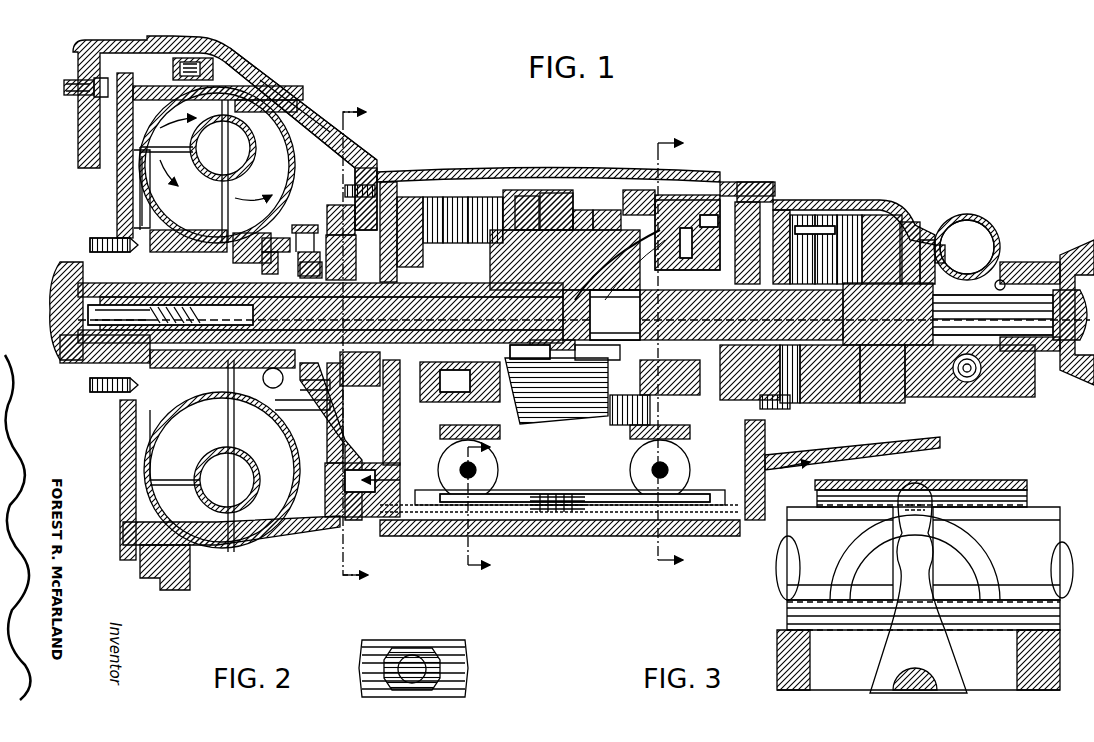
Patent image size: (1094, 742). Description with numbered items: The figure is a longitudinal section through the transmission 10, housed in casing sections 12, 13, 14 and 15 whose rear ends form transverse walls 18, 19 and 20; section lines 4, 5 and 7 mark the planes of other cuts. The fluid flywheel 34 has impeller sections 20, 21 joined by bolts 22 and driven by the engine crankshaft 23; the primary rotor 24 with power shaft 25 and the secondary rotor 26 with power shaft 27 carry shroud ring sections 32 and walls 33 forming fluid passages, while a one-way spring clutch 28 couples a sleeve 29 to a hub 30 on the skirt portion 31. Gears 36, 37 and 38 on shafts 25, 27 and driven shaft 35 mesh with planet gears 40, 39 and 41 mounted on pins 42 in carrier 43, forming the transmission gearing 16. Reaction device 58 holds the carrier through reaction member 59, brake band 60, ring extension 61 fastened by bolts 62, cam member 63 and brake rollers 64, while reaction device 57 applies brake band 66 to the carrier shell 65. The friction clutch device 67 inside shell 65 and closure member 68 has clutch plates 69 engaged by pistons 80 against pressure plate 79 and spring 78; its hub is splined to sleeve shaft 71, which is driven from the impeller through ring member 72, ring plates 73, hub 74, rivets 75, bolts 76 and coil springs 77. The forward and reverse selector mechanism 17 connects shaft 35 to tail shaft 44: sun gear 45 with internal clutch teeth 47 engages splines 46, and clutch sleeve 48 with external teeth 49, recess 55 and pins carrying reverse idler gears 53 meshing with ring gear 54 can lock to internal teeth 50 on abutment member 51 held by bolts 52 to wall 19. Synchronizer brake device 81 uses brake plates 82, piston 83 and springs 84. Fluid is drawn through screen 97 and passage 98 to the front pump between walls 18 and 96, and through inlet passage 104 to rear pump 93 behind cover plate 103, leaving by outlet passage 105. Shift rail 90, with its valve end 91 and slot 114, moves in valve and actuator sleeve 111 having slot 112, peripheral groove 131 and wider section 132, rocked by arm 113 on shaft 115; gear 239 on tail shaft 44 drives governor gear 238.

In FIG. 1, the section line 4- 4 is at (678, 352).
In FIG. 1, the section line 5- 5 is at (363, 344).
In FIG. 1, the section line 7- 7 is at (461, 505).
In FIG. 1, the transmission 10 is at (503, 172).
In FIG. 1, the casing section 12 is at (118, 44).
In FIG. 1, the casing section 13 is at (318, 122).
In FIG. 1, the casing section 14 is at (582, 170).
In FIG. 1, the casing section 15 is at (858, 200).
In FIG. 3, the casing section 15 is at (1055, 648).
In FIG. 1, the transmission gearing 16 is at (526, 188).
In FIG. 1, the forward and reverse selector mechanism 17 is at (790, 245).
In FIG. 1, the transversely extending wall 18 is at (355, 172).
In FIG. 1, the transversely extending wall 19 is at (745, 468).
In FIG. 1, the impeller section 20 is at (118, 180).
In FIG. 1, the impeller section 21 is at (292, 100).
In FIG. 1, the bolts 22 is at (212, 62).
In FIG. 1, the engine crankshaft 23 is at (68, 270).
In FIG. 1, the primary rotor 24 is at (162, 122).
In FIG. 1, the power shaft 25 is at (222, 369).
In FIG. 1, the secondary rotor 26 is at (140, 198).
In FIG. 1, the power shaft 27 is at (335, 250).
In FIG. 1, the one-way spring clutch 28 is at (100, 384).
In FIG. 1, the sleeve 29 is at (80, 360).
In FIG. 1, the hub 30 is at (100, 244).
In FIG. 1, the skirt portion 31 is at (145, 215).
In FIG. 1, the shroud ring section 32 is at (196, 138).
In FIG. 1, the walls 33 is at (196, 120).
In FIG. 1, the fluid flywheel 34 is at (300, 108).
In FIG. 1, the driven shaft 35 is at (624, 325).
In FIG. 1, the gear 36 is at (552, 346).
In FIG. 1, the gear 37 is at (530, 353).
In FIG. 1, the gear 38 is at (580, 356).
In FIG. 1, the planet gear 39 is at (528, 200).
In FIG. 1, the planet gear 40 is at (560, 203).
In FIG. 1, the planet gear 41 is at (606, 210).
In FIG. 1, the pin 42 is at (584, 212).
In FIG. 1, the carrier 43 is at (566, 420).
In FIG. 1, the tail shaft 44 is at (1025, 262).
In FIG. 1, the sun gear 45 is at (784, 384).
In FIG. 1, the splines 46 is at (934, 250).
In FIG. 1, the internal clutch teeth 47 is at (806, 376).
In FIG. 1, the clutch sleeve 48 is at (810, 265).
In FIG. 1, the external teeth 49 is at (790, 260).
In FIG. 1, the internal teeth 50 is at (790, 242).
In FIG. 1, the abutment member 51 is at (778, 225).
In FIG. 1, the bolts 52 is at (922, 240).
In FIG. 1, the reverse idler gears 53 is at (838, 214).
In FIG. 1, the ring gear 54 is at (895, 226).
In FIG. 1, the recess 55 is at (790, 224).
In FIG. 1, the reaction device 57 is at (452, 195).
In FIG. 1, the reaction device 58 is at (690, 195).
In FIG. 1, the reaction member 59 is at (718, 196).
In FIG. 1, the brake band 60 is at (636, 190).
In FIG. 1, the ring extension 61 is at (630, 436).
In FIG. 1, the bolts 62 is at (608, 418).
In FIG. 1, the member 63 is at (699, 246).
In FIG. 1, the brake rollers 64 is at (680, 370).
In FIG. 1, the shell 65 is at (392, 438).
In FIG. 1, the brake band 66 is at (470, 195).
In FIG. 1, the friction clutch device 67 is at (432, 196).
In FIG. 1, the closure member 68 is at (390, 182).
In FIG. 1, the clutch plates 69 is at (498, 438).
In FIG. 1, the sleeve shaft 71 is at (316, 262).
In FIG. 1, the ring member 72 is at (262, 265).
In FIG. 1, the ring plates 73 is at (262, 248).
In FIG. 1, the hub 74 is at (304, 225).
In FIG. 1, the rivets 75 is at (310, 252).
In FIG. 1, the bolts 76 is at (322, 420).
In FIG. 1, the coil springs 77 is at (222, 456).
In FIG. 1, the coil spring 78 is at (506, 200).
In FIG. 1, the pressure plate 79 is at (436, 384).
In FIG. 1, the pistons 80 is at (428, 190).
In FIG. 1, the brake device 81 is at (786, 362).
In FIG. 1, the brake plates 82 is at (796, 395).
In FIG. 1, the piston 83 is at (710, 214).
In FIG. 1, the springs 84 is at (762, 182).
In FIG. 3, the shift rail 90 is at (1040, 510).
In FIG. 1, the valve end 91 is at (368, 371).
In FIG. 1, the rear pump 93 is at (888, 368).
In FIG. 1, the wall 96 is at (376, 170).
In FIG. 1, the screen 97 is at (510, 536).
In FIG. 1, the passage 98 is at (332, 500).
In FIG. 1, the cover plate 103 is at (950, 225).
In FIG. 1, the inlet passage 104 is at (868, 448).
In FIG. 1, the outlet passage 105 is at (958, 222).
In FIG. 2, the valve and actuator sleeve 111 is at (452, 697).
In FIG. 3, the valve and actuator sleeve 111 is at (1035, 552).
In FIG. 3, the slot 112 is at (985, 555).
In FIG. 3, the arm 113 is at (940, 612).
In FIG. 3, the slot 114 is at (958, 532).
In FIG. 3, the shaft 115 is at (905, 693).
In FIG. 2, the peripheral groove 131 is at (410, 690).
In FIG. 2, the wider groove section 132 is at (400, 680).
In FIG. 1, the gear 238 is at (967, 382).
In FIG. 1, the gear 239 is at (1005, 280).